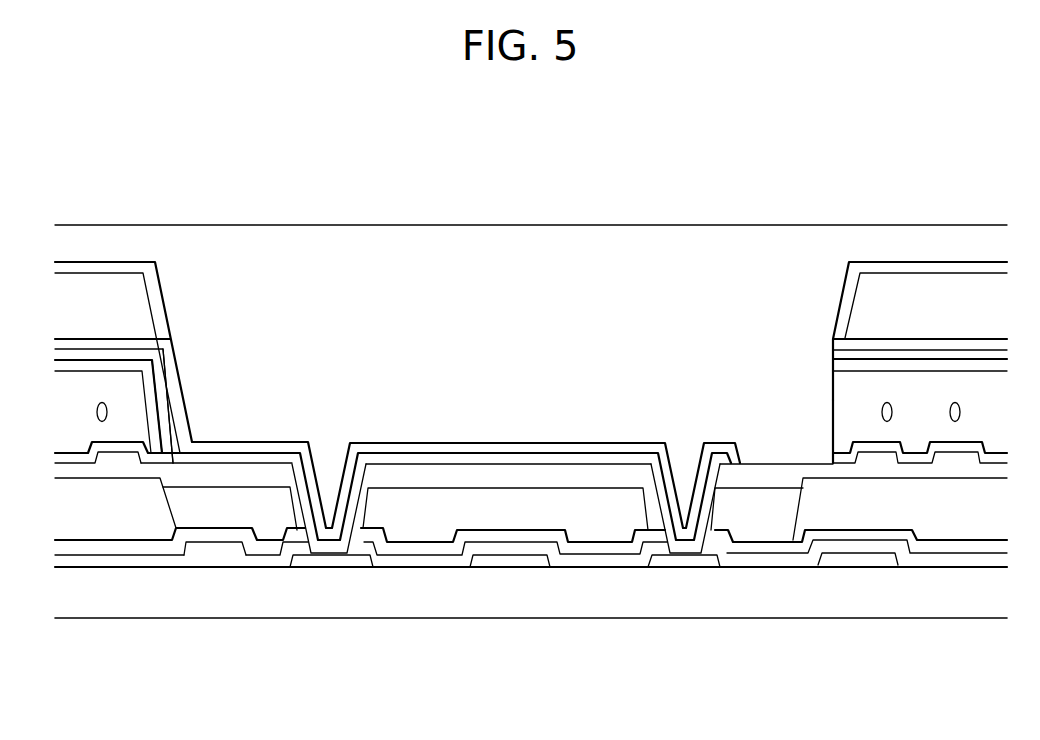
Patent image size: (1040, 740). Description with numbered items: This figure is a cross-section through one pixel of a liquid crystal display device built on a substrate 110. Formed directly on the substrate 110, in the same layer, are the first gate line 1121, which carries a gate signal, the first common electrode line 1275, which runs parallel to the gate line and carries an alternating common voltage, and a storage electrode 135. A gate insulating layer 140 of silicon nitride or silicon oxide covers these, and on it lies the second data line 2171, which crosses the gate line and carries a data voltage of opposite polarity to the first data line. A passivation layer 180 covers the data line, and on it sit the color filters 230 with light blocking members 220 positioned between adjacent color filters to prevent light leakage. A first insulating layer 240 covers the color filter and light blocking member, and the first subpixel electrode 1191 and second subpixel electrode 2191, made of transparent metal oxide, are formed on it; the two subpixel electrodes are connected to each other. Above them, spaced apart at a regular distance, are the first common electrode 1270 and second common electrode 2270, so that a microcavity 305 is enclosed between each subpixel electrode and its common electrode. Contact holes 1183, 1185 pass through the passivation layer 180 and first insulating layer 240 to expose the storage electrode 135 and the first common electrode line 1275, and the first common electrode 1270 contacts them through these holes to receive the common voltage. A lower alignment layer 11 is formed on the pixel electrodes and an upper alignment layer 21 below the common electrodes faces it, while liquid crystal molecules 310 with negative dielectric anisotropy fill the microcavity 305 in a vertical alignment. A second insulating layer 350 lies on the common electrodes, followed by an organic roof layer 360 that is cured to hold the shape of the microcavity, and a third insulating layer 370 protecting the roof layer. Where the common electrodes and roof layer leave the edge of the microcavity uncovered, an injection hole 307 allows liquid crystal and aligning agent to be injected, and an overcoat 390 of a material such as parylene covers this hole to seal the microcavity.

The lower alignment layer 11 is at (85, 460).
The upper alignment layer 21 is at (78, 368).
The substrate 110 is at (962, 605).
The storage electrode 135 is at (337, 563).
The gate insulating layer 140 is at (568, 565).
The passivation layer 180 is at (617, 548).
The light blocking member 220 is at (265, 515).
The color filter 230 is at (150, 525).
The first insulating layer 240 is at (240, 478).
The microcavity 305 is at (135, 417).
The injection hole 307 is at (837, 397).
The liquid crystal molecules 310 is at (840, 416).
The second insulating layer 350 is at (188, 302).
The roof layer 360 is at (123, 293).
The third insulating layer 370 is at (102, 262).
The overcoat 390 is at (565, 240).
The first gate line 1121 is at (508, 563).
The contact hole 1183 is at (312, 550).
The contact hole 1185 is at (670, 538).
The first subpixel electrode 1191 is at (125, 457).
The first common electrode 1270 is at (162, 347).
The first common electrode line 1275 is at (680, 560).
The second data line 2171 is at (215, 548).
The second subpixel electrode 2191 is at (873, 457).
The second common electrode 2270 is at (842, 357).